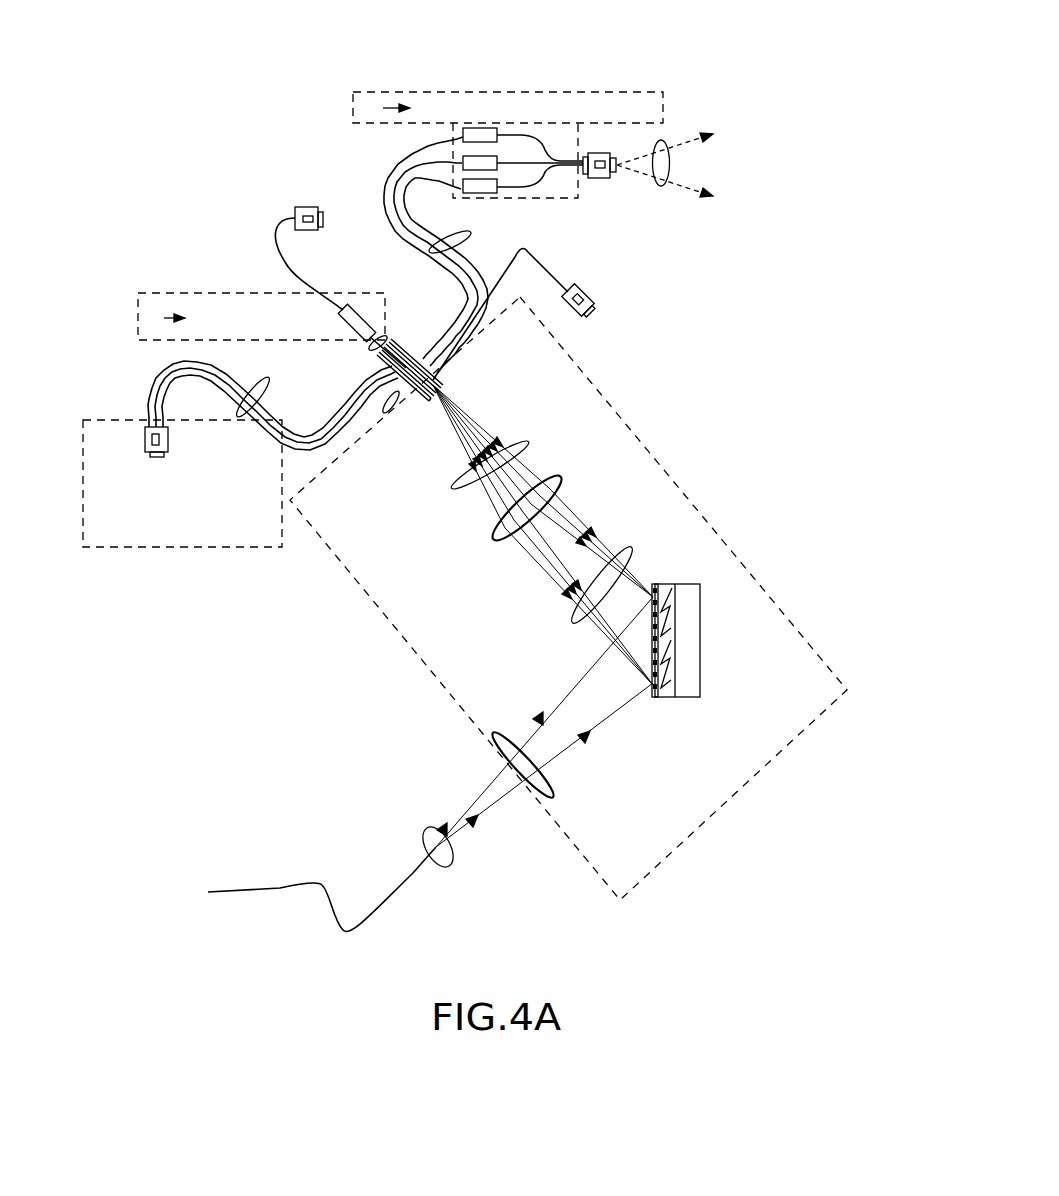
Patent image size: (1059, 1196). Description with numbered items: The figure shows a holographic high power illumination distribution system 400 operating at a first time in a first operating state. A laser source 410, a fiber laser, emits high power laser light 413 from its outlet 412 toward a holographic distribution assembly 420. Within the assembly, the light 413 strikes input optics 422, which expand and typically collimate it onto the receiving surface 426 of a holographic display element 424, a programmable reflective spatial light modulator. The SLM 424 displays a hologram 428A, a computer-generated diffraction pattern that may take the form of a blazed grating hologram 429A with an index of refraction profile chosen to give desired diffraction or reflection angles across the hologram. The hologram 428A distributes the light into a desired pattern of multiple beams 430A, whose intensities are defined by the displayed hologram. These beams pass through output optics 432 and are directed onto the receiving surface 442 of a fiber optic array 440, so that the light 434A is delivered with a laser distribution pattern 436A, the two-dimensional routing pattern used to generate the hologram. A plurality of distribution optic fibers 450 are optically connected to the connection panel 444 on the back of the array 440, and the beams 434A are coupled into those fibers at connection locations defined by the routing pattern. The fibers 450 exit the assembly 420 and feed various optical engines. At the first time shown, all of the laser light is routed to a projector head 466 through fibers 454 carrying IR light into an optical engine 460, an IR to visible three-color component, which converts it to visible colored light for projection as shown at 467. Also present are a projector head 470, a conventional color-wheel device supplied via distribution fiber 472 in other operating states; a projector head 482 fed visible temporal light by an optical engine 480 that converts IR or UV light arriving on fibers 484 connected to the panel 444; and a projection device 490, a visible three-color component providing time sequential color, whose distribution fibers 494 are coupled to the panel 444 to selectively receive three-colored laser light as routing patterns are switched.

The illumination distribution system 400 is at (186, 156).
The laser source 410 is at (265, 905).
The outlet 412 is at (407, 880).
The laser light 413 is at (423, 828).
The holographic distribution assembly 420 is at (725, 543).
The input optics 422 is at (555, 798).
The holographic display element 424 is at (675, 562).
The receiving surface 426 is at (654, 699).
The hologram 428A is at (686, 699).
The blazed grating hologram 429A is at (692, 677).
The beams 430A is at (632, 552).
The output optics 432 is at (565, 480).
The light 434A is at (525, 443).
The laser distribution pattern 436A is at (456, 378).
The fiber optic array 440 is at (398, 437).
The receiving surface 442 is at (400, 415).
The connection panel 444 is at (380, 413).
The distribution optic fibers 450 is at (430, 323).
The fibers 454 is at (430, 250).
The optical engine 460 is at (571, 92).
The projector head 466 is at (600, 180).
The projection 467 is at (668, 140).
The projector head 470 is at (596, 296).
The distribution fiber 472 is at (535, 250).
The optical engine 480 is at (171, 290).
The projector head 482 is at (304, 192).
The fibers 484 is at (362, 362).
The projection device 490 is at (151, 550).
The distribution fibers 494 is at (262, 390).